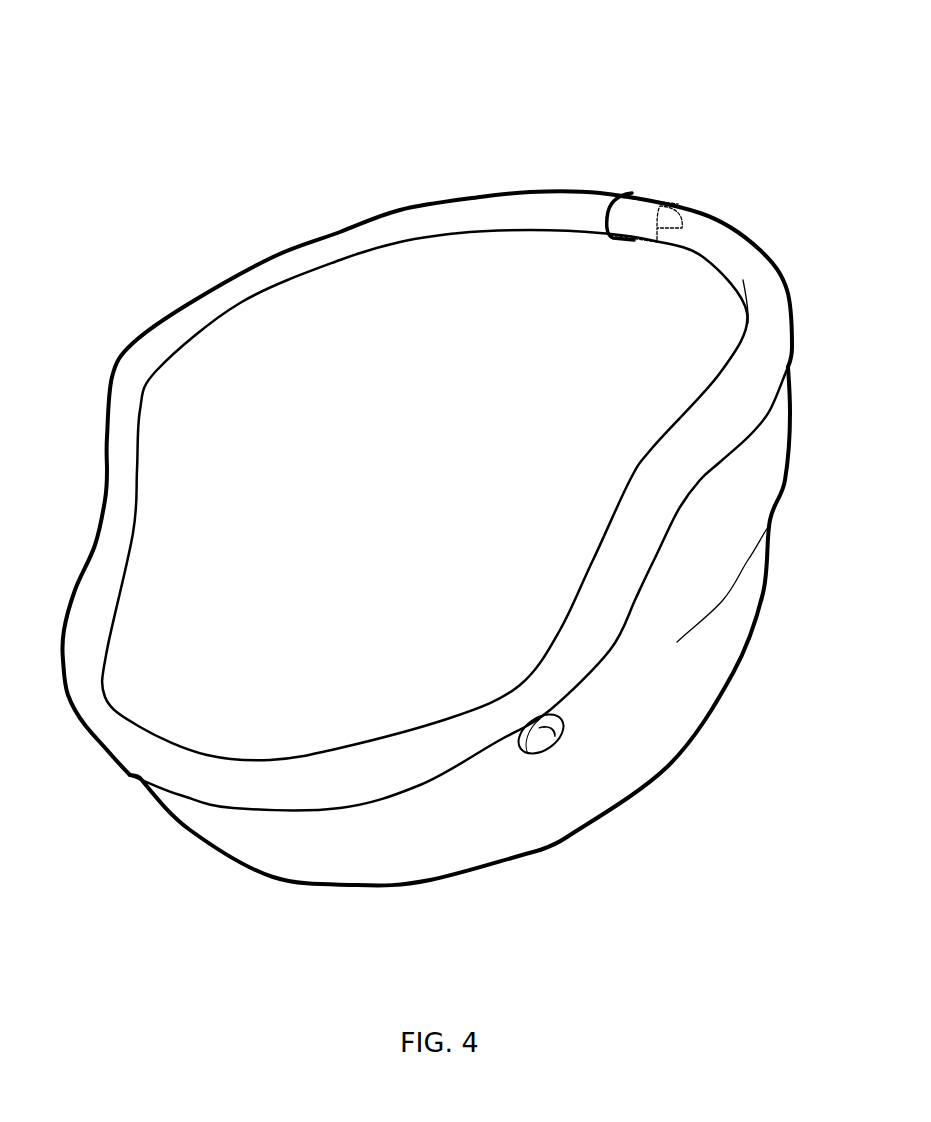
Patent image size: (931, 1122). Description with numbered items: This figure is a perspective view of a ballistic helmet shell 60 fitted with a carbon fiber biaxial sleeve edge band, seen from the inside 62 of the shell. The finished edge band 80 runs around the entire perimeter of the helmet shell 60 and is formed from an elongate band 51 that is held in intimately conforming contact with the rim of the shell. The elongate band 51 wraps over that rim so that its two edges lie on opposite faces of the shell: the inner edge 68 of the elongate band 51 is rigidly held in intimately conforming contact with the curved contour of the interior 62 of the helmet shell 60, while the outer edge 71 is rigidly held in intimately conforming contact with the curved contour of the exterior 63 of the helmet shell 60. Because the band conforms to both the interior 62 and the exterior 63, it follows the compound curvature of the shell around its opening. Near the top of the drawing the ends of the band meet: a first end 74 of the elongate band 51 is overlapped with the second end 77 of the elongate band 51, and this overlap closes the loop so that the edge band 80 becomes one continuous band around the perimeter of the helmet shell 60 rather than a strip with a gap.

The elongate band 51 is at (459, 415).
The helmet shell 60 is at (460, 655).
The inside of the helmet shell 62 is at (425, 393).
The exterior of the helmet shell 63 is at (307, 845).
The inner edge 68 is at (473, 242).
The outer edge 71 is at (757, 434).
The first end 74 is at (665, 210).
The second end 77 is at (625, 210).
The edge band 80 is at (107, 340).